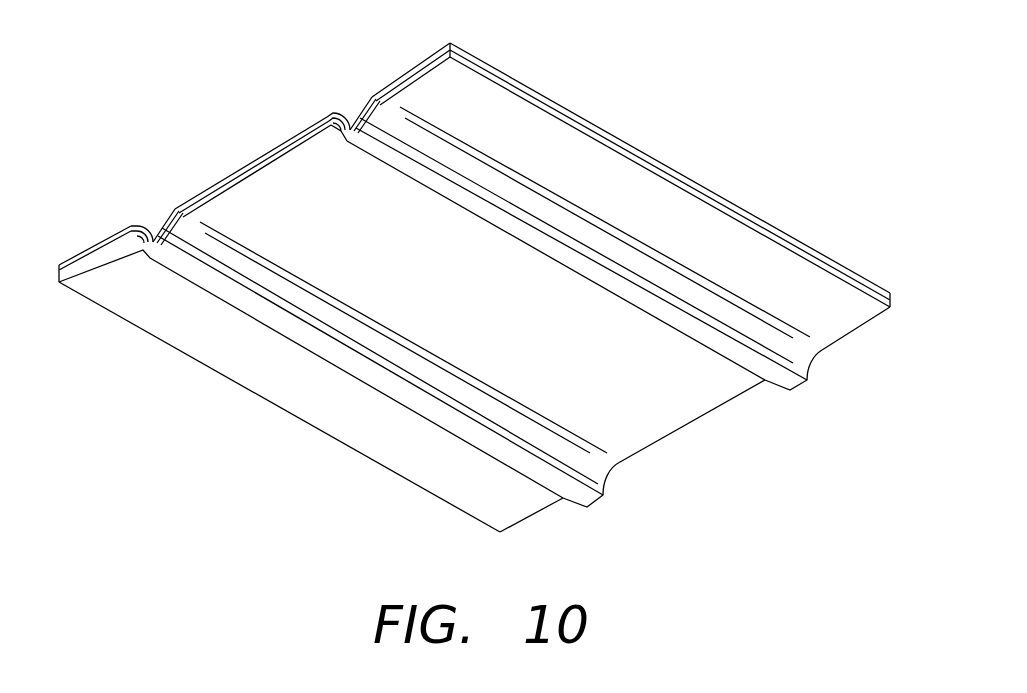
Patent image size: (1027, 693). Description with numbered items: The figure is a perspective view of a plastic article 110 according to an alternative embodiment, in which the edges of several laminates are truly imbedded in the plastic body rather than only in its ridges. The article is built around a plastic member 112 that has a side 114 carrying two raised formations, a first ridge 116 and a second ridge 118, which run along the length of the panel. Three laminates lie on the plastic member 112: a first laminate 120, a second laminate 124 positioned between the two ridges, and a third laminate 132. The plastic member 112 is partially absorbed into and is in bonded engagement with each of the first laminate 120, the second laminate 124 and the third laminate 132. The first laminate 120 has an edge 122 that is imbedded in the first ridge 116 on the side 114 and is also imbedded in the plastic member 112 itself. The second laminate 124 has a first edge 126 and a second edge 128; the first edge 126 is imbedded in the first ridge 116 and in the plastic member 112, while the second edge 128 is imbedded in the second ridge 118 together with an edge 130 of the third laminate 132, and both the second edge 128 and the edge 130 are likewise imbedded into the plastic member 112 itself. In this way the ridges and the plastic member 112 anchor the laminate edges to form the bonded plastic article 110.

The plastic article 110 is at (669, 522).
The plastic member 112 is at (820, 305).
The side 114 is at (392, 446).
The first ridge 116 is at (352, 99).
The second ridge 118 is at (151, 209).
The first laminate 120 is at (428, 61).
The edge 122 is at (356, 105).
The second laminate 124 is at (243, 164).
The first edge 126 is at (338, 113).
The second edge 128 is at (162, 232).
The edge 130 is at (143, 228).
The third laminate 132 is at (88, 258).